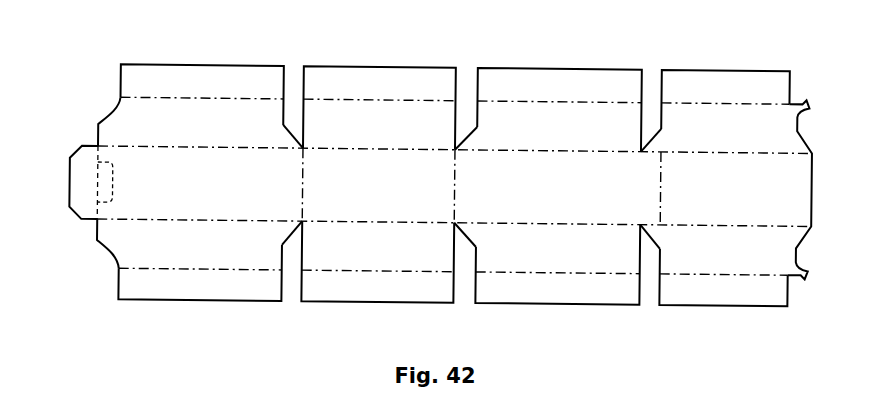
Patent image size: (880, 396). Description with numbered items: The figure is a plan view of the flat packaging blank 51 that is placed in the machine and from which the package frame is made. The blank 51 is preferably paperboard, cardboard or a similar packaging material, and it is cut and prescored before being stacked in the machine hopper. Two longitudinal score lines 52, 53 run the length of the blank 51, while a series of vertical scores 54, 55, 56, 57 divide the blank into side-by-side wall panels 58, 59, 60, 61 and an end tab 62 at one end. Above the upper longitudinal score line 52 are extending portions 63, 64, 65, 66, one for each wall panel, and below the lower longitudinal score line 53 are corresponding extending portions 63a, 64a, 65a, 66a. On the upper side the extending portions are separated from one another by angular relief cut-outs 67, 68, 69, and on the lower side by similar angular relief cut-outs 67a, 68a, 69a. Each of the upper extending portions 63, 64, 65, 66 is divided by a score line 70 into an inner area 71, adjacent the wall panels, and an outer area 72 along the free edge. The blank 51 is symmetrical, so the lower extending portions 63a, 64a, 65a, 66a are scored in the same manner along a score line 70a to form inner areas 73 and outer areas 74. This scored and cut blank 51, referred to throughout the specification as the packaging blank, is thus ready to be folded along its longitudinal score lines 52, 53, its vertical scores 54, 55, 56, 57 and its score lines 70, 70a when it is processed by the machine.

The flat packaging blank 51 is at (424, 171).
The longitudinal score line 52 is at (228, 147).
The longitudinal score line 53 is at (236, 218).
The vertical score 54 is at (100, 150).
The vertical score 55 is at (306, 151).
The vertical score 56 is at (458, 151).
The vertical score 57 is at (663, 150).
The wall panel 58 is at (190, 193).
The wall panel 59 is at (374, 193).
The wall panel 60 is at (545, 193).
The wall panel 61 is at (724, 193).
The end tab 62 is at (77, 177).
The extending portion 63 is at (181, 64).
The extending portion 64 is at (353, 64).
The extending portion 65 is at (534, 64).
The extending portion 66 is at (701, 64).
The angular relief cut-out 67 is at (302, 106).
The angular relief cut-out 68 is at (476, 105).
The angular relief cut-out 69 is at (660, 105).
The extending portion 63a is at (165, 299).
The extending portion 64a is at (368, 299).
The extending portion 65a is at (545, 299).
The extending portion 66a is at (703, 299).
The angular relief cut-out 67a is at (284, 258).
The angular relief cut-out 68a is at (458, 258).
The angular relief cut-out 69a is at (645, 258).
The score line 70 is at (208, 97).
The score line 70a is at (207, 268).
The inner area 71 is at (162, 135).
The outer area 72 is at (190, 91).
The inner area 73 is at (172, 257).
The outer area 74 is at (190, 297).